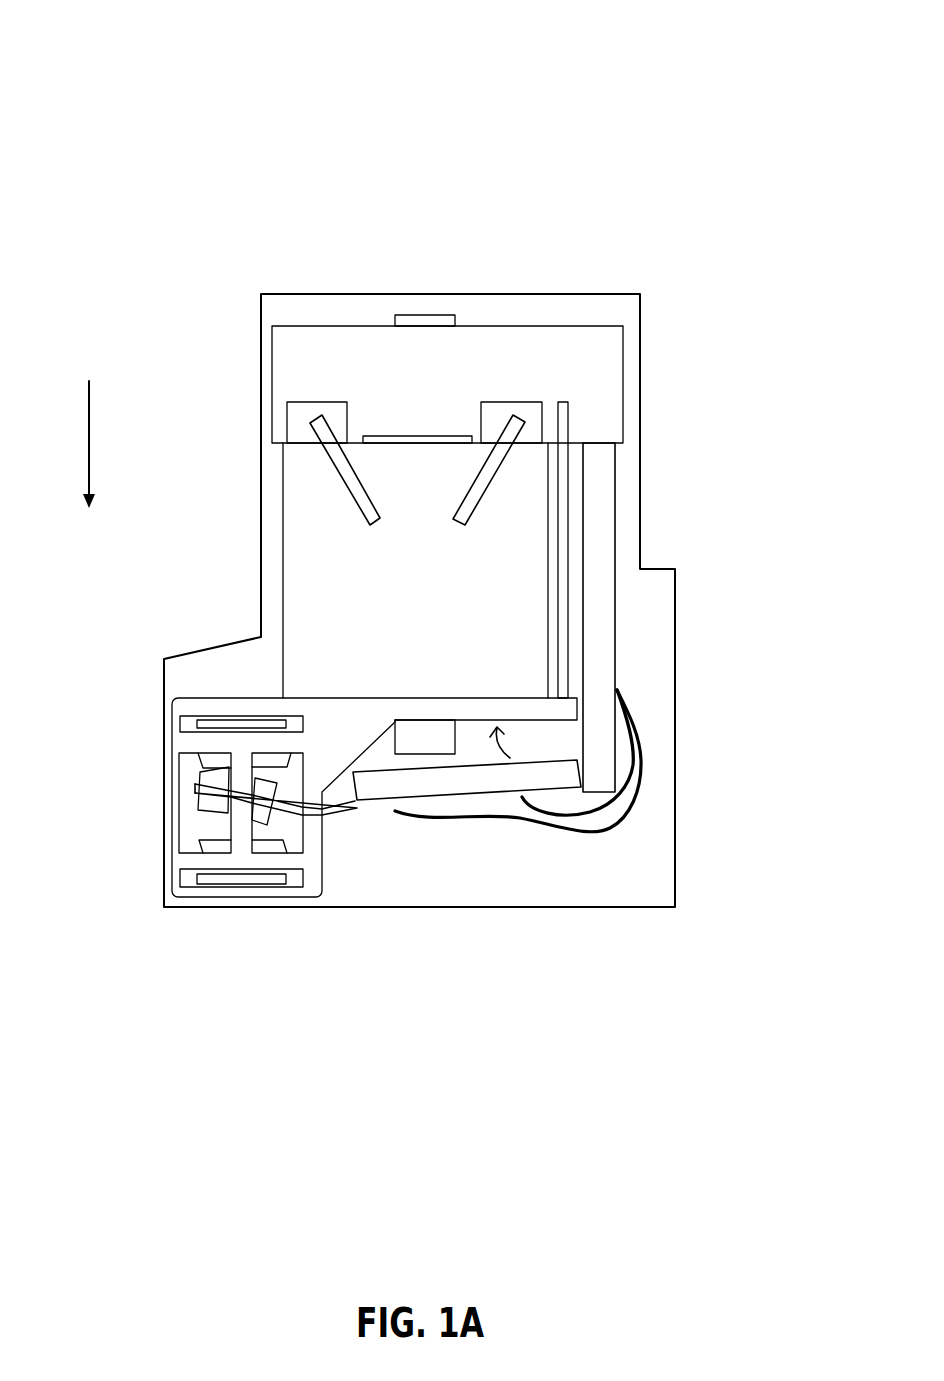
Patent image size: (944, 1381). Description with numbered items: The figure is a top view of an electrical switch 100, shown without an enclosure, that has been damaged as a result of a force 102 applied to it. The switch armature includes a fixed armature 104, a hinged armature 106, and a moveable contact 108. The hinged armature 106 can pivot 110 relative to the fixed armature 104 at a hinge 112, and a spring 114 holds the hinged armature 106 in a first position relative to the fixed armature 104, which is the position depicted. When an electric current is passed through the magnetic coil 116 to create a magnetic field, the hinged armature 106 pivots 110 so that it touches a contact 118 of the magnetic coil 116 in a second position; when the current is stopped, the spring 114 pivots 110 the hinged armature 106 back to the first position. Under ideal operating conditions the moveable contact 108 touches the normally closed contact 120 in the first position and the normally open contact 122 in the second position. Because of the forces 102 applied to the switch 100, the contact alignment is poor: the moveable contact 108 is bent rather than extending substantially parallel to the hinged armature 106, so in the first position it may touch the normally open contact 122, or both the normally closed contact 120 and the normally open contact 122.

The electrical switch 100 is at (768, 66).
The force 102 is at (89, 441).
The fixed armature 104 is at (603, 520).
The hinged armature 106 is at (492, 783).
The moveable contact 108 is at (358, 808).
The pivot 110 is at (503, 752).
The hinge 112 is at (600, 777).
The spring 114 is at (612, 808).
The magnetic coil 116 is at (385, 472).
The contact of the magnetic coil 118 is at (425, 728).
The normally closed contact 120 is at (242, 878).
The normally open contact 122 is at (210, 725).